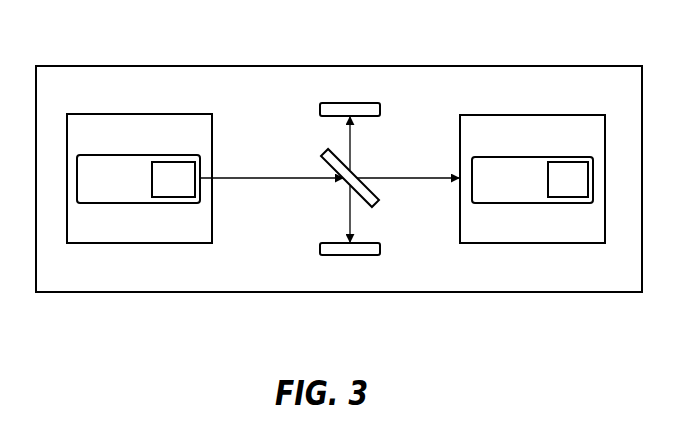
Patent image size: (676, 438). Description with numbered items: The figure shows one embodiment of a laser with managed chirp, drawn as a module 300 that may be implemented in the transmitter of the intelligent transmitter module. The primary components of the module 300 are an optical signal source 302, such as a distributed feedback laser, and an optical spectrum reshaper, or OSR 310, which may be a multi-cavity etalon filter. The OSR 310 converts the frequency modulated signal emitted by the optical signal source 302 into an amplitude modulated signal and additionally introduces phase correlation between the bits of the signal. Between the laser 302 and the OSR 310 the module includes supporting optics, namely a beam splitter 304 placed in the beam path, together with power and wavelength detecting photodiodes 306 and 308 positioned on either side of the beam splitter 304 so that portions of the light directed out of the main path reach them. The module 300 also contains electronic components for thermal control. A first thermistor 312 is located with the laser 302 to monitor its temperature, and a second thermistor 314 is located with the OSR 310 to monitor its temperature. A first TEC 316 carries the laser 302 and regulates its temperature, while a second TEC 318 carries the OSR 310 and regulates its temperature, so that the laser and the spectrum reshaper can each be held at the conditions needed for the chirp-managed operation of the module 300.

The module 300 is at (338, 65).
The optical signal source 302 is at (115, 203).
The beam splitter 304 is at (326, 153).
The photodiode 306 is at (381, 248).
The photodiode 308 is at (381, 111).
The optical spectrum reshaper 310 is at (507, 203).
The first thermistor 312 is at (189, 191).
The second thermistor 314 is at (585, 192).
The first TEC 316 is at (182, 145).
The second TEC 318 is at (575, 145).